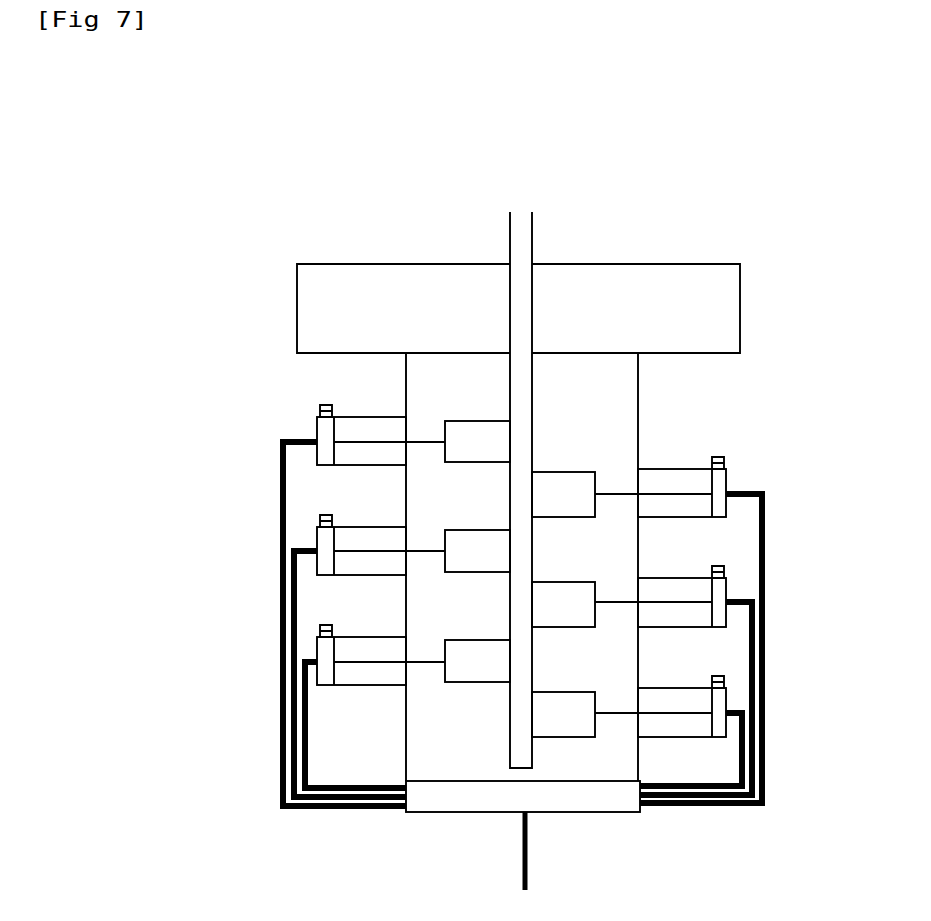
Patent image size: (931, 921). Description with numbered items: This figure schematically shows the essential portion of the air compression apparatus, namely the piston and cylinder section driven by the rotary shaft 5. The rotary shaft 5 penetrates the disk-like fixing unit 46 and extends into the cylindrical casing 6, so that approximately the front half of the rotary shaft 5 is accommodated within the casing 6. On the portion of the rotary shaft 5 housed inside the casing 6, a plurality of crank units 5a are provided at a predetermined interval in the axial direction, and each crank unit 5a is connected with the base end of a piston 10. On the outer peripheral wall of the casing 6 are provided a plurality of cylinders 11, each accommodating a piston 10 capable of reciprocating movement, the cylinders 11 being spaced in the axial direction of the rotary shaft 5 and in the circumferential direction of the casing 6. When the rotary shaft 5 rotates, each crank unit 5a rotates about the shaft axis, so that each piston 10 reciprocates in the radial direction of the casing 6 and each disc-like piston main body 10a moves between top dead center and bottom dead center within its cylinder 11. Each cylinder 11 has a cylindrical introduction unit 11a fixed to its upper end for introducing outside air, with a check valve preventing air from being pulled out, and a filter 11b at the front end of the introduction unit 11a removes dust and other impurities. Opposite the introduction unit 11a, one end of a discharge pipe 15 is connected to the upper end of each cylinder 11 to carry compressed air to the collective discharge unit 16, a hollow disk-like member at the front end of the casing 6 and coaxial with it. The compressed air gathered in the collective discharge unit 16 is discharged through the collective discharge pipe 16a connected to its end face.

The rotary shaft 5 is at (532, 238).
The crank unit 5a is at (480, 421).
The cylindrical casing 6 is at (638, 415).
The piston 10 is at (363, 441).
The piston main body 10a is at (333, 430).
The cylinder 11 is at (366, 466).
The introduction unit 11a is at (319, 409).
The filter 11b is at (322, 405).
The discharge pipe 15 is at (352, 790).
The collective discharge unit 16 is at (480, 813).
The collective discharge pipe 16a is at (528, 857).
The fixing unit 46 is at (702, 262).